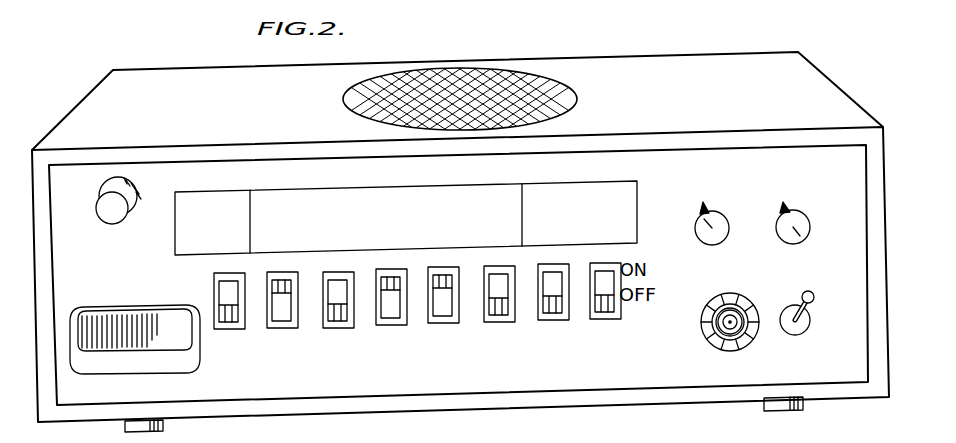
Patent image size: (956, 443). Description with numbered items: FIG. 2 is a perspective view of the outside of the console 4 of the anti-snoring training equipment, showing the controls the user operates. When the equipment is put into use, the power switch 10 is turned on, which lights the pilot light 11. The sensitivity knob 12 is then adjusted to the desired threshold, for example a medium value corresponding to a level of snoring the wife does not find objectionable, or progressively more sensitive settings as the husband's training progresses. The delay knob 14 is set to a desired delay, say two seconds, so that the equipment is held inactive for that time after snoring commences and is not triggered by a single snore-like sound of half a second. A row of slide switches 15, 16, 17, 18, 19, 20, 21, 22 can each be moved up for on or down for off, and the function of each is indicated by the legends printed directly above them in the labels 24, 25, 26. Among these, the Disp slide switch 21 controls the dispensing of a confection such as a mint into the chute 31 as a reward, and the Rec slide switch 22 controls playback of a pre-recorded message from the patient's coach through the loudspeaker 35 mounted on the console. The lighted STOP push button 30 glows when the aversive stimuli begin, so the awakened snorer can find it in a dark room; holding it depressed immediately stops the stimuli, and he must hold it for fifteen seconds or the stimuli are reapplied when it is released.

The console 4 is at (140, 45).
The loudspeaker 35 is at (489, 84).
The STOP push button 30 is at (111, 207).
The label 24 is at (239, 195).
The label 25 is at (343, 196).
The label 26 is at (620, 183).
The delay knob 14 is at (696, 233).
The sensitivity knob 12 is at (808, 233).
The chute 31 is at (133, 346).
The slide switch 15 is at (222, 331).
The slide switch 16 is at (275, 330).
The slide switch 17 is at (331, 330).
The slide switch 18 is at (384, 327).
The slide switch 19 is at (436, 325).
The slide switch 20 is at (492, 324).
The Disp slide switch 21 is at (546, 322).
The Rec slide switch 22 is at (598, 321).
The pilot light 11 is at (733, 348).
The power switch 10 is at (810, 328).